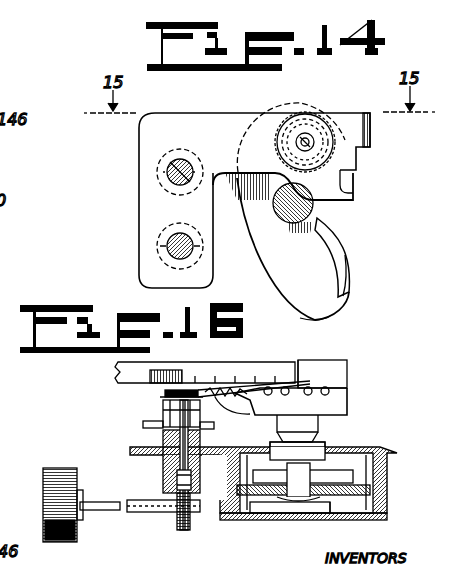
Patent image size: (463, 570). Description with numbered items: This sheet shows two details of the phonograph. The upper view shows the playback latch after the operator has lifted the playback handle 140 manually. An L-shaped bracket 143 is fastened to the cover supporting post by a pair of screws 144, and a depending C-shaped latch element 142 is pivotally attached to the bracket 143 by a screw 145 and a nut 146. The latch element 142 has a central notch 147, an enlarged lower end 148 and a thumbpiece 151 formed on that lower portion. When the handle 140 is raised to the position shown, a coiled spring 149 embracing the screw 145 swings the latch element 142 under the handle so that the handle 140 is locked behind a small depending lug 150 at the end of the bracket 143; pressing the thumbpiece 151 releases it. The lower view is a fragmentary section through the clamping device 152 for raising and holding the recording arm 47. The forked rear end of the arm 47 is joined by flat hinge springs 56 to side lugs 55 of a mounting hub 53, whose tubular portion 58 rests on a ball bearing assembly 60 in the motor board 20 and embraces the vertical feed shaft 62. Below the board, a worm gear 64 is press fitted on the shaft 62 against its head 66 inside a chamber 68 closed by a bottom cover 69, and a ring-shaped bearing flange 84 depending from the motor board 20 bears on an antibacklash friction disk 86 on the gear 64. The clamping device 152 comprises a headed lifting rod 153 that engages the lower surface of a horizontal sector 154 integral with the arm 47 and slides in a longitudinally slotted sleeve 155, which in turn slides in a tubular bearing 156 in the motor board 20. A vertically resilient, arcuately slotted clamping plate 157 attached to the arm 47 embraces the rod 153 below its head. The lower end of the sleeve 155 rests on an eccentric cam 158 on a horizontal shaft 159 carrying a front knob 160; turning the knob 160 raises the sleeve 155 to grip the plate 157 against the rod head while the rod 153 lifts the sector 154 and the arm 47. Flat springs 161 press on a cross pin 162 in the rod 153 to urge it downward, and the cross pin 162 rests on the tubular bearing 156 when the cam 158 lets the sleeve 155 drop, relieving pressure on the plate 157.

In FIG. 14, the L-shaped bracket 143 is at (148, 169).
In FIG. 14, the screws 144 is at (172, 234).
In FIG. 14, the screw 145 is at (302, 138).
In FIG. 14, the nut 146 is at (326, 130).
In FIG. 14, the coiled spring 149 is at (253, 143).
In FIG. 14, the depending lug 150 is at (356, 186).
In FIG. 14, the playback handle 140 is at (307, 206).
In FIG. 14, the central notch 147 is at (292, 226).
In FIG. 14, the enlarged lower end 148 is at (350, 262).
In FIG. 14, the thumbpiece 151 is at (346, 279).
In FIG. 14, the C-shaped latch element 142 is at (343, 311).
In FIG. 16, the recording arm 47 is at (115, 370).
In FIG. 16, the horizontal sector 154 is at (195, 378).
In FIG. 16, the side lugs 55 is at (330, 372).
In FIG. 16, the flat hinge springs 56 is at (300, 383).
In FIG. 16, the mounting hub 53 is at (352, 388).
In FIG. 16, the tubular portion 58 is at (318, 438).
In FIG. 16, the ball bearing assembly 60 is at (325, 455).
In FIG. 16, the motor board 20 is at (388, 450).
In FIG. 16, the feed shaft 62 is at (375, 473).
In FIG. 16, the bearing flange 84 is at (303, 477).
In FIG. 16, the chamber 68 is at (363, 500).
In FIG. 16, the head 66 is at (303, 505).
In FIG. 16, the antibacklash friction disk 86 is at (265, 508).
In FIG. 16, the worm gear 64 is at (340, 506).
In FIG. 16, the bottom cover 69 is at (383, 517).
In FIG. 16, the longitudinally slotted sleeve 155 is at (168, 457).
In FIG. 16, the tubular bearing 156 is at (166, 478).
In FIG. 16, the flat springs 161 is at (162, 412).
In FIG. 16, the lifting rod 153 is at (165, 393).
In FIG. 16, the clamping device 152 is at (150, 401).
In FIG. 16, the cross pin 162 is at (145, 424).
In FIG. 16, the resilient clamping plate 157 is at (217, 400).
In FIG. 16, the eccentric cam 158 is at (183, 528).
In FIG. 16, the horizontal shaft 159 is at (145, 511).
In FIG. 16, the knob 160 is at (63, 542).